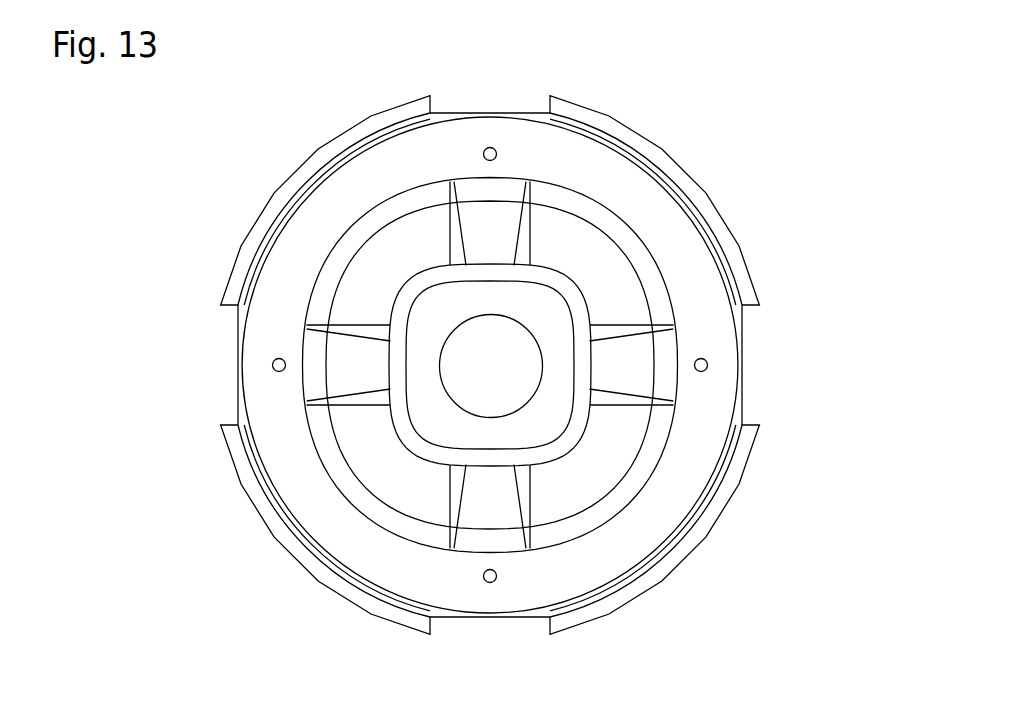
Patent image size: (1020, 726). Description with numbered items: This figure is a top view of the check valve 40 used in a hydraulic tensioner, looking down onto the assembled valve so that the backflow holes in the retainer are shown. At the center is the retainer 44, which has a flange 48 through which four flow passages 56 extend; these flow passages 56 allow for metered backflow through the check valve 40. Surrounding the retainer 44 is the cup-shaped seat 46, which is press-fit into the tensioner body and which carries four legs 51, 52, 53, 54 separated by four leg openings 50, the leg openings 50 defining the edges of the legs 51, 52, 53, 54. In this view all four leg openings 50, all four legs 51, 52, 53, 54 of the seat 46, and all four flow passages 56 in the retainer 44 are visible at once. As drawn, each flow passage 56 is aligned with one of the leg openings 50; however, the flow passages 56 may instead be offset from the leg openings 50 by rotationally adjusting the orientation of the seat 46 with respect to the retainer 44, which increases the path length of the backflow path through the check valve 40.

The check valve 40 is at (158, 213).
The retainer 44 is at (505, 378).
The cup-shaped seat 46 is at (252, 503).
The flange 48 is at (710, 502).
The leg openings 50 is at (508, 95).
The leg 51 is at (300, 557).
The leg 52 is at (312, 166).
The leg 53 is at (688, 596).
The leg 54 is at (705, 192).
The flow passages 56 is at (487, 148).